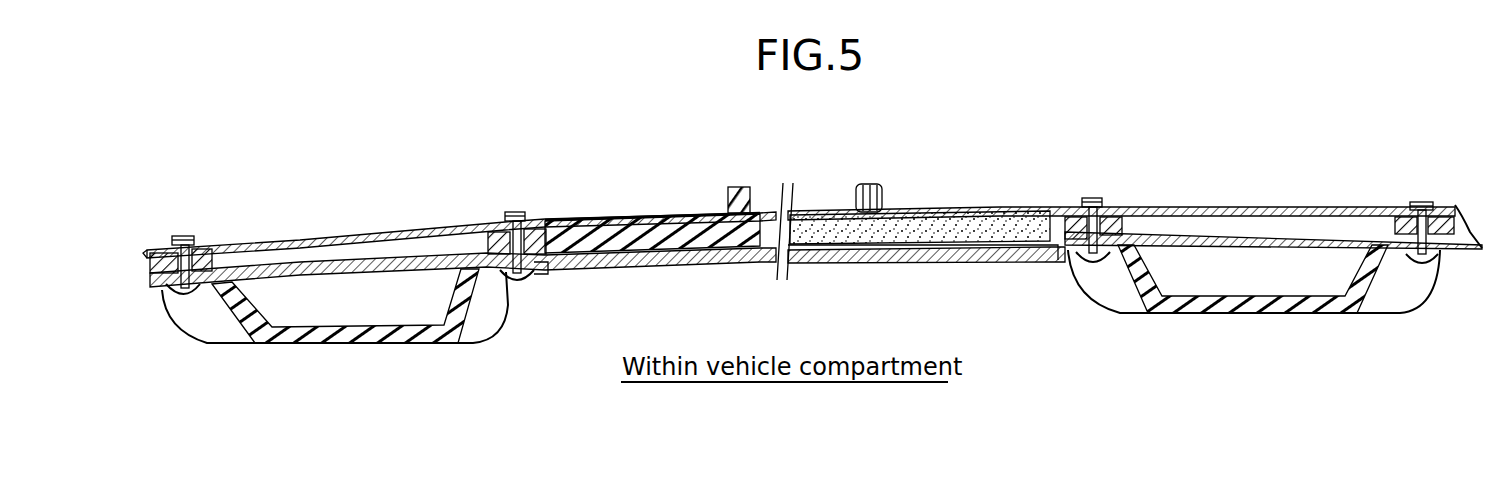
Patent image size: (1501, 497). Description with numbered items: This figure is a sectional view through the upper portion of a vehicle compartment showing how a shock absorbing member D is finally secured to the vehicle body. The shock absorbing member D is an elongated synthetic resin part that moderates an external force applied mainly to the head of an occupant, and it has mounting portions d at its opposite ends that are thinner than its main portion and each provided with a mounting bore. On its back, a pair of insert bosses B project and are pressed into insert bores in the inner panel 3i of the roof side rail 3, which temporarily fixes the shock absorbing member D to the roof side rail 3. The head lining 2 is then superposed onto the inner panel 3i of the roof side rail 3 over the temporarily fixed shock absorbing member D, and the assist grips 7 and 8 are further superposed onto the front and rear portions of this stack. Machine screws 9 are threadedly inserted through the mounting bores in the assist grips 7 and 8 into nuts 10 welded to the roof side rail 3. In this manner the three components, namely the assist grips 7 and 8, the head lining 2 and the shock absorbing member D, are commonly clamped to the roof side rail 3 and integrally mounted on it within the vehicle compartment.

The head lining 2 is at (898, 264).
The roof side rail 3 is at (613, 208).
The inner panel 3i is at (645, 212).
The assist grip 7 is at (380, 333).
The assist grip 8 is at (1263, 316).
The machine screw 9 is at (527, 278).
The nut 10 is at (517, 212).
The mounting portion d is at (500, 237).
The insert boss B is at (738, 179).
The shock absorbing member D is at (960, 203).